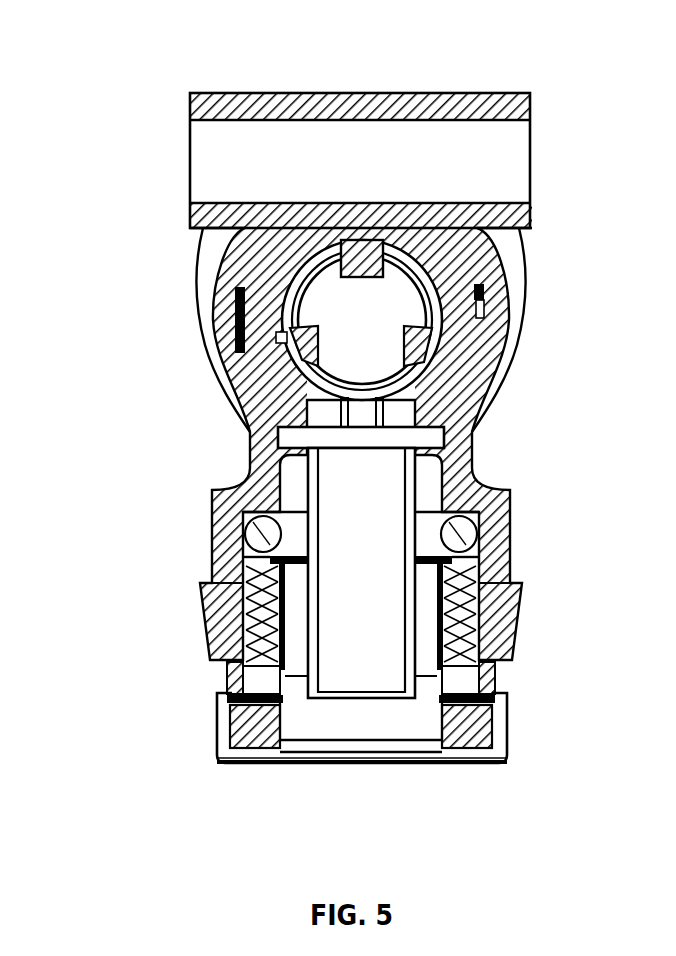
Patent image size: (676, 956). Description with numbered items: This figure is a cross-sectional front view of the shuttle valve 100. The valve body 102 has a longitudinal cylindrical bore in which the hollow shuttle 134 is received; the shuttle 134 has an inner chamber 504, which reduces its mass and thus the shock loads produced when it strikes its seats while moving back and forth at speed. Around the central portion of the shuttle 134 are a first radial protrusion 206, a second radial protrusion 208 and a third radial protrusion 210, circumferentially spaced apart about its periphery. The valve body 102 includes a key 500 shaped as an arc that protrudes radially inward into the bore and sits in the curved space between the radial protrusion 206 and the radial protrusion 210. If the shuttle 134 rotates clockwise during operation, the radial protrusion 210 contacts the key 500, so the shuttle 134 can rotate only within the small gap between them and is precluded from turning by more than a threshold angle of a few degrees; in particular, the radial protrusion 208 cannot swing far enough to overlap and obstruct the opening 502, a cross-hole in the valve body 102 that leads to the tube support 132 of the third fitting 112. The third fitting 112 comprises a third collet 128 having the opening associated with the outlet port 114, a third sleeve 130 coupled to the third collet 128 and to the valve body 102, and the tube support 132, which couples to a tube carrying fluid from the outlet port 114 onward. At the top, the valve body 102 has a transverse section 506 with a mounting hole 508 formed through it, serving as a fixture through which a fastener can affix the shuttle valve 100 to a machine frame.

The shuttle valve 100 is at (101, 98).
The valve body 102 is at (486, 343).
The third fitting 112 is at (197, 722).
The outlet port 114 is at (354, 772).
The third collet 128 is at (488, 735).
The third sleeve 130 is at (488, 667).
The tube support 132 is at (310, 684).
The shuttle 134 is at (440, 304).
The first radial protrusion 206 is at (357, 236).
The second radial protrusion 208 is at (433, 370).
The third radial protrusion 210 is at (286, 351).
The key 500 is at (272, 288).
The opening 502 is at (360, 454).
The inner chamber 504 is at (390, 290).
The transverse section 506 is at (369, 88).
The mounting hole 508 is at (538, 160).